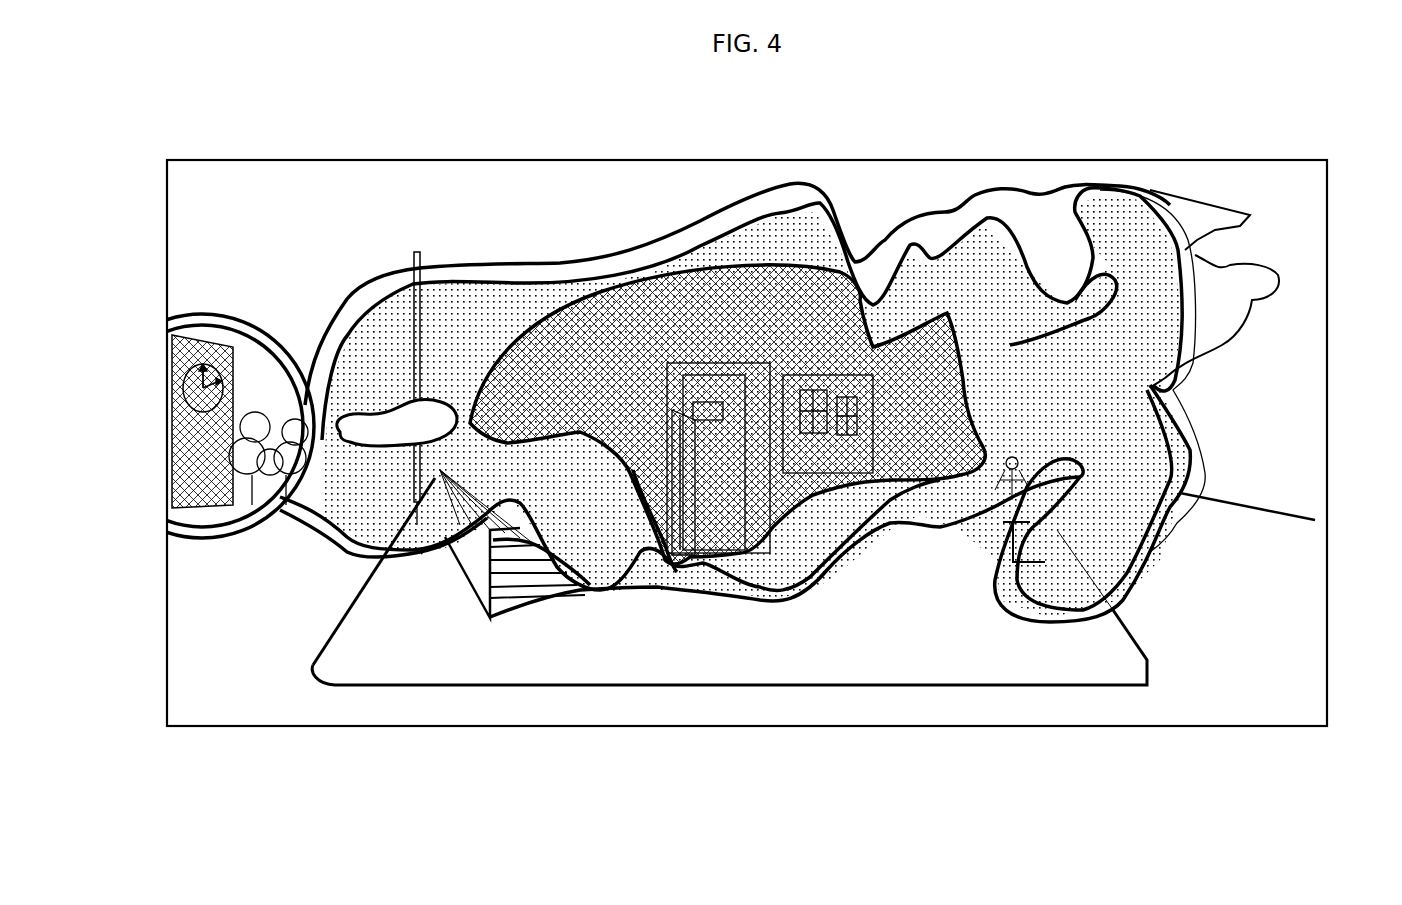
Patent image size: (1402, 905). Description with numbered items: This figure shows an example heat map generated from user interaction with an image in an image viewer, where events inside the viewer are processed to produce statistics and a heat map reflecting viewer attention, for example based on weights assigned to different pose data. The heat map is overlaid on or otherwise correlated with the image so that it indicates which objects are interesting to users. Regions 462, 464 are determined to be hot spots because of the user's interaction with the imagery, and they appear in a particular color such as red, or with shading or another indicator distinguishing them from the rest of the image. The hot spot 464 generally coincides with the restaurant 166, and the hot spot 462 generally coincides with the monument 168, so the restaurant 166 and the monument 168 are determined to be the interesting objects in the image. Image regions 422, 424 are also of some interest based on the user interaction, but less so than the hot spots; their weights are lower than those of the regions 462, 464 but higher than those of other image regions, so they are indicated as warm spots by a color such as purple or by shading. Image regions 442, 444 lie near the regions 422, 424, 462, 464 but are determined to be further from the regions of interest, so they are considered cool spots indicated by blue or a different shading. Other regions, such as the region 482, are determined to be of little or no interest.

The cool spot image region 442 is at (278, 342).
The cool spot image region 444 is at (790, 202).
The restaurant 166 is at (582, 338).
The monument 168 is at (190, 335).
The hot spot region 462 is at (200, 462).
The warm spot image region 422 is at (392, 512).
The hot spot region 464 is at (773, 457).
The warm spot image region 424 is at (1123, 453).
The image region of little or no interest 482 is at (1243, 672).